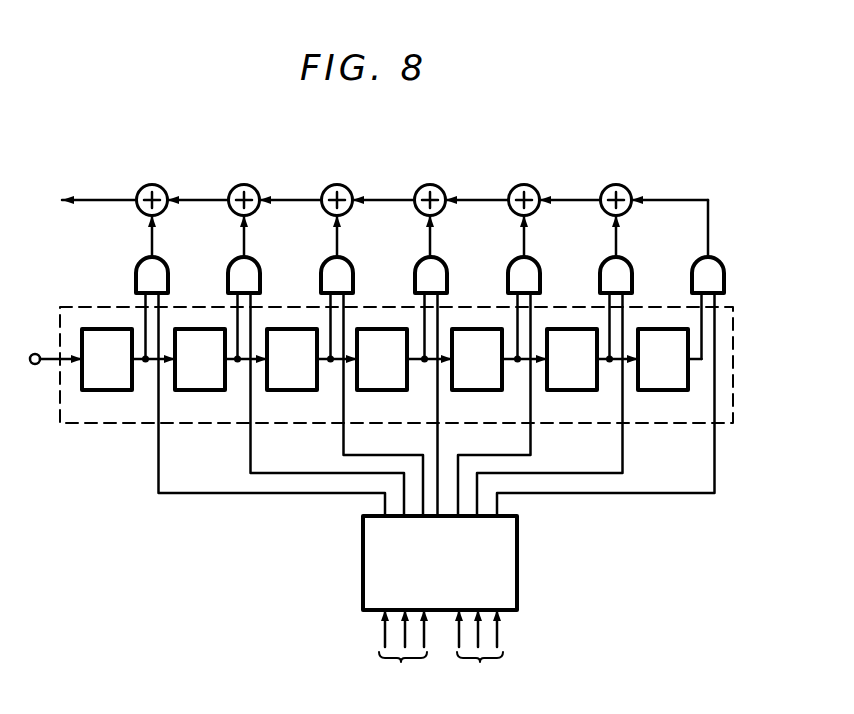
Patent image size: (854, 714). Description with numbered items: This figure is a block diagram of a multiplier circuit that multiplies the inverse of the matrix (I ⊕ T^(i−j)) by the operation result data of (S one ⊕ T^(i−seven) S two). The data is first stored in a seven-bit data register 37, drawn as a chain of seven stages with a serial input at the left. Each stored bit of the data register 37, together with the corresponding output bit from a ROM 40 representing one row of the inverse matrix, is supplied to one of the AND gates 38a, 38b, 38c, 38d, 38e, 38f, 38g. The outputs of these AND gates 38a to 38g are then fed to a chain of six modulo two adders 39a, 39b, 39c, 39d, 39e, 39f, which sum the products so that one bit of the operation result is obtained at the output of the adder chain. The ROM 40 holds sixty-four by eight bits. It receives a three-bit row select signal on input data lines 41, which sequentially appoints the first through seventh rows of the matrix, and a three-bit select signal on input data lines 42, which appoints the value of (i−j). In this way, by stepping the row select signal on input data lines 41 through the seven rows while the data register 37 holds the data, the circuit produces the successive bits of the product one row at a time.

The data register 37 is at (109, 425).
The AND gate 38a is at (169, 272).
The AND gate 38b is at (261, 272).
The AND gate 38c is at (354, 272).
The AND gate 38d is at (448, 272).
The AND gate 38e is at (541, 272).
The AND gate 38f is at (633, 272).
The AND gate 38g is at (725, 272).
The modulo 2 adder 39a is at (162, 187).
The modulo 2 adder 39b is at (254, 187).
The modulo 2 adder 39c is at (348, 189).
The modulo 2 adder 39d is at (441, 189).
The modulo 2 adder 39e is at (535, 189).
The modulo 2 adder 39f is at (627, 189).
The ROM 40 is at (517, 563).
The input data lines 41 is at (403, 658).
The input data lines 42 is at (479, 658).